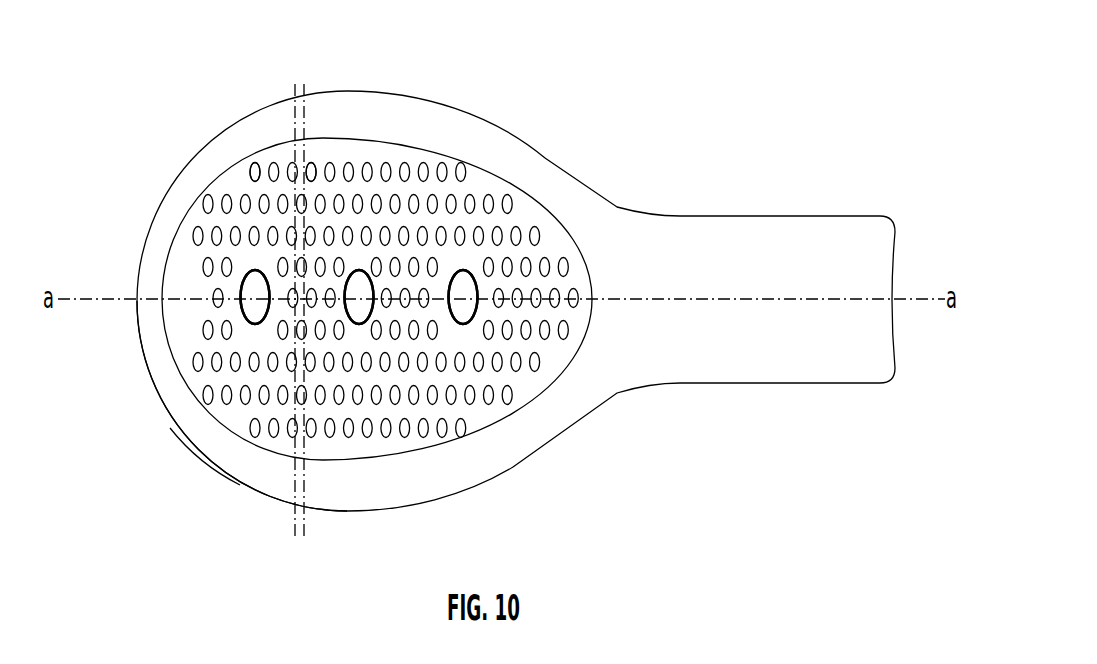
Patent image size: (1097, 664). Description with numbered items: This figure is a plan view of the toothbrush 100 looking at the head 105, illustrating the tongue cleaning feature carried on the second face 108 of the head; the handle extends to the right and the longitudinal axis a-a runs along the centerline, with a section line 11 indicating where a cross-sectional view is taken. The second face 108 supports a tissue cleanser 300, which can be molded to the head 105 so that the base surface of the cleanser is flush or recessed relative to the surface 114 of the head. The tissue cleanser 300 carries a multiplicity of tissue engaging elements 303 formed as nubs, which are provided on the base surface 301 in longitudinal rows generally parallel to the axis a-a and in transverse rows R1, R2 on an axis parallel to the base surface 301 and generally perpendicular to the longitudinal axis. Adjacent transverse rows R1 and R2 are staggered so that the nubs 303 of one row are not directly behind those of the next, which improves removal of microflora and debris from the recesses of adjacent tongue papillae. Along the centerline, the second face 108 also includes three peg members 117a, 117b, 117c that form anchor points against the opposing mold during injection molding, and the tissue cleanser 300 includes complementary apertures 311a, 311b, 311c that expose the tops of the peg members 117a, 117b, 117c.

The toothbrush 100 is at (710, 50).
The surface of the head 114 is at (455, 123).
The second face 108 is at (167, 358).
The head 105 is at (173, 448).
The base surface 301 is at (165, 265).
The tissue cleanser 300 is at (531, 213).
The tissue engaging elements 303 is at (255, 162).
The peg member 117a is at (257, 325).
The peg member 117b is at (360, 322).
The peg member 117c is at (463, 325).
The aperture 311a is at (255, 270).
The aperture 311b is at (357, 268).
The aperture 311c is at (463, 270).
The transverse row of nubs R1 is at (295, 537).
The transverse row of nubs R2 is at (307, 537).
The section line 11- 11 is at (78, 299).